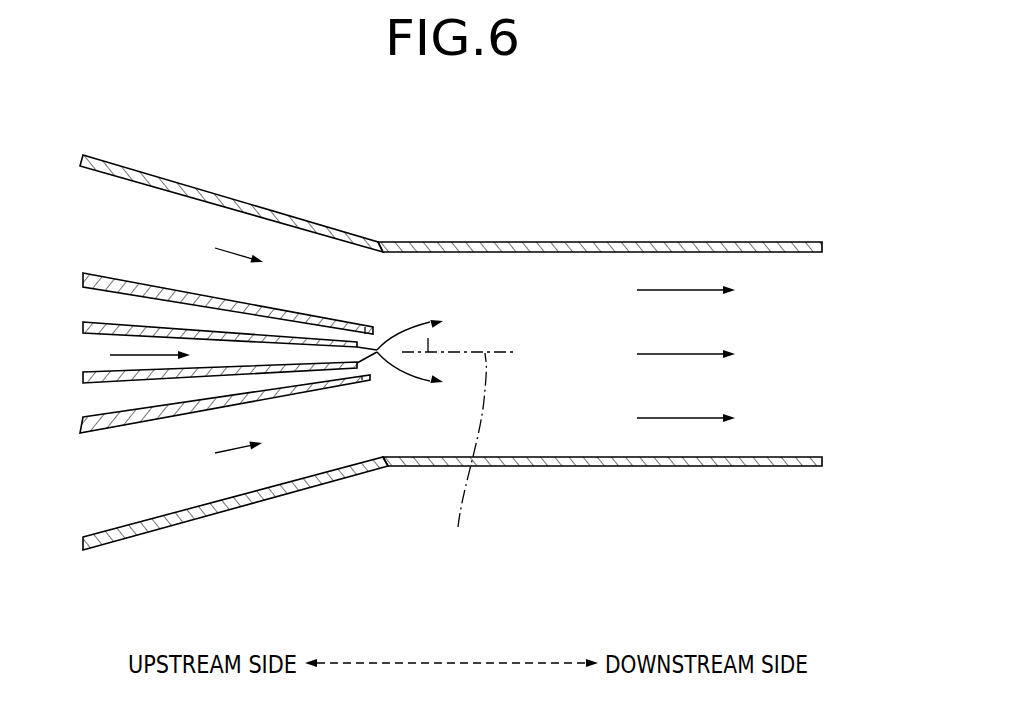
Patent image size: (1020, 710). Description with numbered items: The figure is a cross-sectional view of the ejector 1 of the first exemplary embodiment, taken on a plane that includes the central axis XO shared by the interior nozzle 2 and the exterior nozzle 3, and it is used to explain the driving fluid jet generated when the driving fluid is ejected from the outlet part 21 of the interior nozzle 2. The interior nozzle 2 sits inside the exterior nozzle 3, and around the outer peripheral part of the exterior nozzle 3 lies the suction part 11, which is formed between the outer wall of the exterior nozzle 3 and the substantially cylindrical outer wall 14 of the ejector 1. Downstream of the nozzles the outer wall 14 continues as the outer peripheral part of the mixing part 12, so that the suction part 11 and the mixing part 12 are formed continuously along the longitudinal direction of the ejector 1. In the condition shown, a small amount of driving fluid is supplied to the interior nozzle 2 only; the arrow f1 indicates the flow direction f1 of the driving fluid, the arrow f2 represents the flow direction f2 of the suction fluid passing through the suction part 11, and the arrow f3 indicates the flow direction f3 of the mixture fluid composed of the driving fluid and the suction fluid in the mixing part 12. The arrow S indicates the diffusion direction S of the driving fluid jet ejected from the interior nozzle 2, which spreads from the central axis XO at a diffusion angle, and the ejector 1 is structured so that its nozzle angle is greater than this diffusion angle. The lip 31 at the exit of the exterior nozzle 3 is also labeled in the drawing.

The ejector 1 is at (602, 153).
The interior nozzle 2 is at (193, 370).
The exterior nozzle 3 is at (172, 292).
The suction part 11 is at (185, 488).
The mixing part 12 is at (577, 395).
The outer wall 14 is at (490, 243).
The outlet part 21 is at (368, 377).
The outlet tip of outer nozzle wall 31 is at (378, 328).
The diffusion direction S is at (404, 327).
The central axis XO is at (465, 456).
The flow direction of the driving fluid f1 is at (147, 356).
The flow direction of the suction fluid f2 is at (243, 448).
The flow direction of the mixture fluid f3 is at (664, 354).